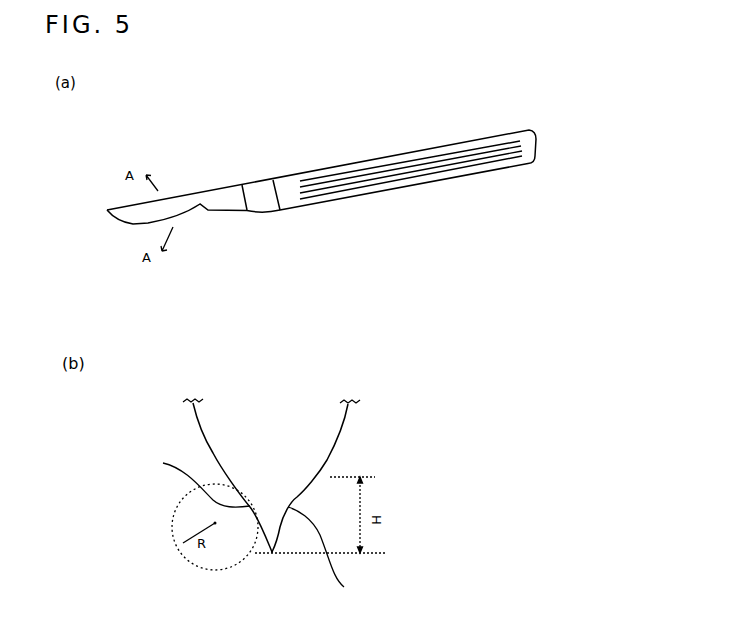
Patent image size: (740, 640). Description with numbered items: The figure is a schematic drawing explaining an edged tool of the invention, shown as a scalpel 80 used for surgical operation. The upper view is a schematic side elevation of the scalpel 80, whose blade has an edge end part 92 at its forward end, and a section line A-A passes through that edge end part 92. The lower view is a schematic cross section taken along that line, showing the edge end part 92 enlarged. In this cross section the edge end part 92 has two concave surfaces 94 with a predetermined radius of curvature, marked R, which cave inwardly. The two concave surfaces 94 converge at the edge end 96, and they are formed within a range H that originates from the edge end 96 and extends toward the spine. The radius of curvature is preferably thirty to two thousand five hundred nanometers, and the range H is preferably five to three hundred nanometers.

The surgical knife 80 is at (367, 129).
The edge end part 92 is at (134, 224).
The concave surfaces 94 is at (252, 529).
The edge end 96 is at (272, 553).